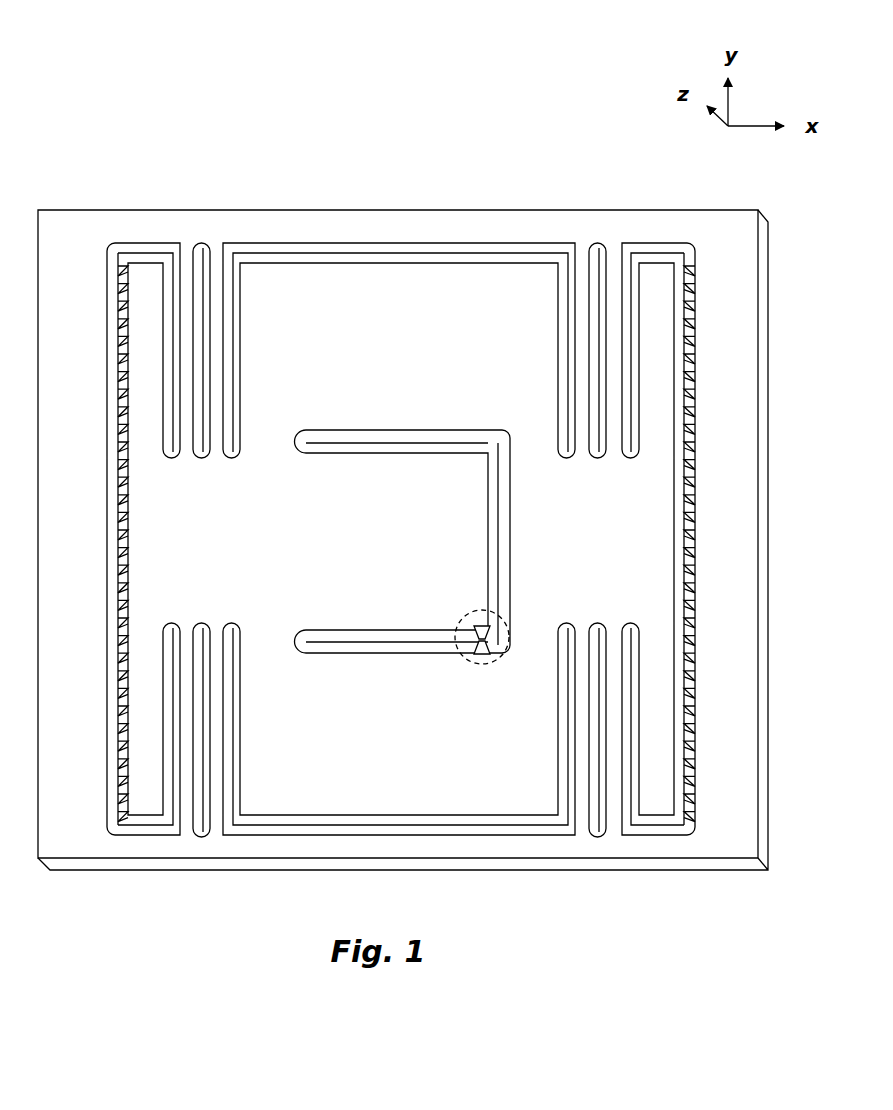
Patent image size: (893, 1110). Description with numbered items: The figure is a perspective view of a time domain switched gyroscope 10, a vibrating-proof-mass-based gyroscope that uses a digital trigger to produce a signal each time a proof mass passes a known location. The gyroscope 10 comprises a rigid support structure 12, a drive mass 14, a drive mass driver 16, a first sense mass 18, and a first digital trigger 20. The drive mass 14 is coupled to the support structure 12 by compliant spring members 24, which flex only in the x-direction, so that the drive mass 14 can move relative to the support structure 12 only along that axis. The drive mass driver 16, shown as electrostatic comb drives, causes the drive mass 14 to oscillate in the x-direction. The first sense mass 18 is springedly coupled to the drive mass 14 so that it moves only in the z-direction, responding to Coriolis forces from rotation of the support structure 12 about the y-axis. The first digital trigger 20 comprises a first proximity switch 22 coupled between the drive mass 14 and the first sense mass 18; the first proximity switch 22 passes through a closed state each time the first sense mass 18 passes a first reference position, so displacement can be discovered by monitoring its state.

The time domain switched gyroscope 10 is at (137, 88).
The rigid support structure 12 is at (360, 210).
The drive mass 14 is at (414, 367).
The drive mass driver 16 is at (130, 530).
The first sense mass 18 is at (436, 520).
The first digital trigger 20 is at (495, 665).
The first proximity switch 22 is at (506, 692).
The compliant spring members 24 is at (218, 256).